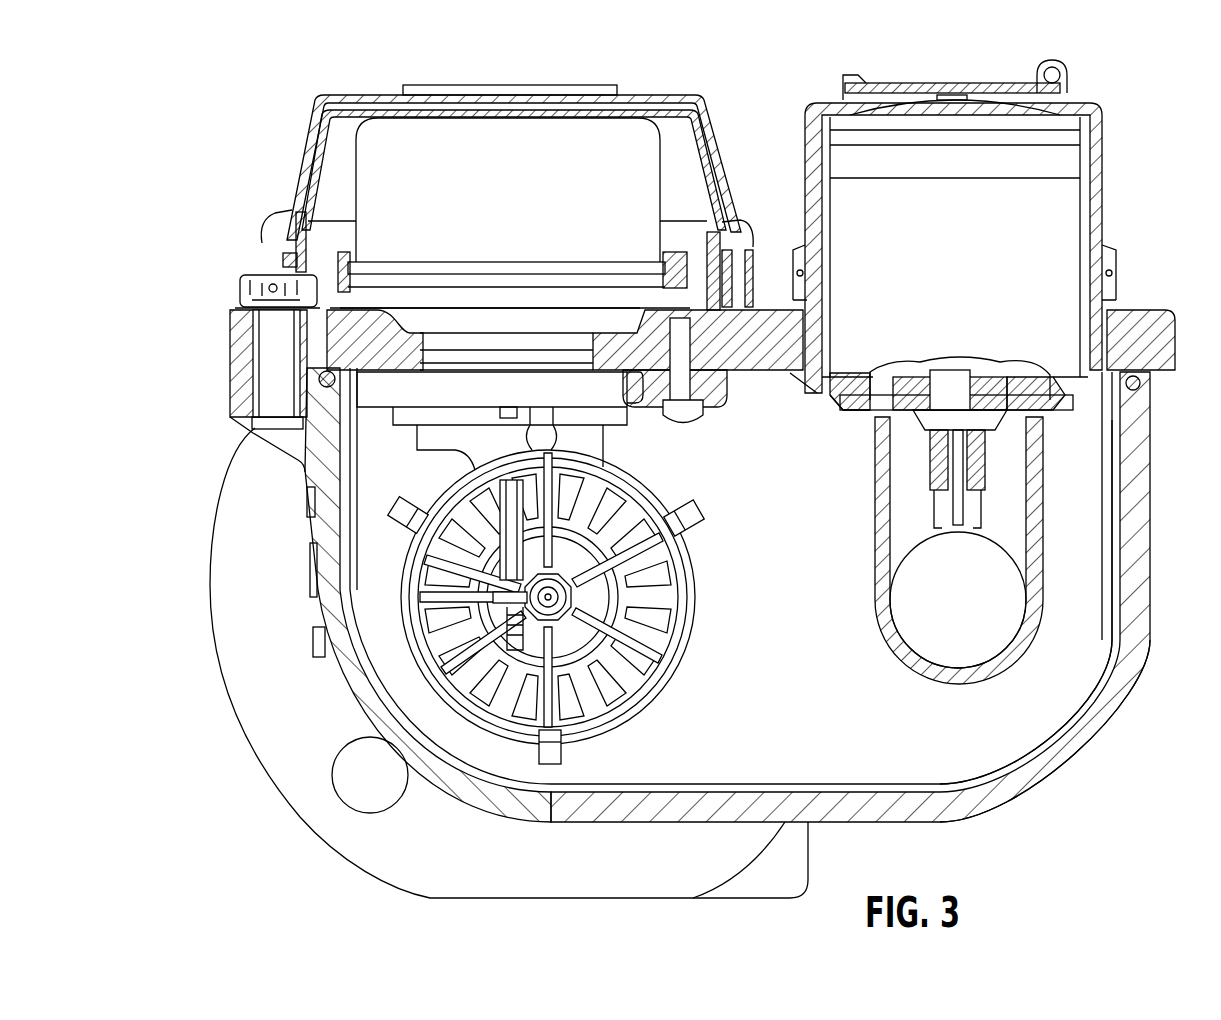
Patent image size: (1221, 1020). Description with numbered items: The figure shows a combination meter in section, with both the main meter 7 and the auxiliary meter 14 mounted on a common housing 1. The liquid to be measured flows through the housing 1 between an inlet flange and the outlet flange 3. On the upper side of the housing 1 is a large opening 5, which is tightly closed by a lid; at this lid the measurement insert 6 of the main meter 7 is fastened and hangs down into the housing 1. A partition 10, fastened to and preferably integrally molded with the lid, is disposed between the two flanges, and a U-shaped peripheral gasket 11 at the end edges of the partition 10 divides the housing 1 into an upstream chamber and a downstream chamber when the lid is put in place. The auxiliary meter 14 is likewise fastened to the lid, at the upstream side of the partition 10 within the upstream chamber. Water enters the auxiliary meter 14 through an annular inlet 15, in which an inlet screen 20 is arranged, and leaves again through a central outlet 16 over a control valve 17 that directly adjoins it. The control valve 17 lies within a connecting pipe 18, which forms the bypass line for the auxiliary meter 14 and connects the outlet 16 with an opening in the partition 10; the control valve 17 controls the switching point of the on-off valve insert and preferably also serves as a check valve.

The housing 1 is at (1160, 672).
The outlet flange 3 is at (243, 698).
The large opening 5 is at (1100, 402).
The measurement insert 6 is at (718, 573).
The main meter 7 is at (270, 176).
The partition 10 is at (1090, 553).
The peripheral gasket 11 is at (1077, 700).
The auxiliary meter 14 is at (1118, 178).
The annular inlet 15 is at (860, 417).
The central outlet 16 is at (983, 390).
The control valve 17 is at (1000, 463).
The connecting pipe 18 is at (878, 565).
The inlet screen 20 is at (848, 392).